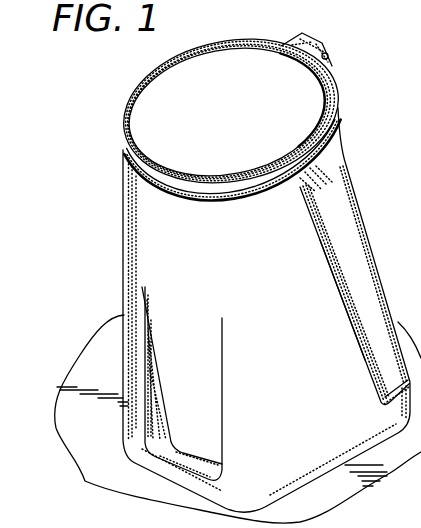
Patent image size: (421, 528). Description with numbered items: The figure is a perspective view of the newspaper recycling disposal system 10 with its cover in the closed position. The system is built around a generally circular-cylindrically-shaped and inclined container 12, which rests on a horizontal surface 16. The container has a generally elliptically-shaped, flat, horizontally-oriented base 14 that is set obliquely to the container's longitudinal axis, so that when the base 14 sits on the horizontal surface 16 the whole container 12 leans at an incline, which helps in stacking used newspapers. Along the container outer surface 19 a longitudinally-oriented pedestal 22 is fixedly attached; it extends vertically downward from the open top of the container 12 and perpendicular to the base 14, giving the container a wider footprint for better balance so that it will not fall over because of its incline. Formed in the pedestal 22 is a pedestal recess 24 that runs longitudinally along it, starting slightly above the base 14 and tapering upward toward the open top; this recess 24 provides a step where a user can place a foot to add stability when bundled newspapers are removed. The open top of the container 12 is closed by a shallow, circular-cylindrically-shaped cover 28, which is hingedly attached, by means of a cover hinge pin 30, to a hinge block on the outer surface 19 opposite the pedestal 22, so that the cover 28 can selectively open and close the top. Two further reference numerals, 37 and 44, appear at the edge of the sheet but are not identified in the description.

The newspaper recycling disposal system 10 is at (104, 159).
The container 12 is at (374, 219).
The base 14 is at (322, 476).
The horizontal surface 16 is at (103, 348).
The container outer surface 19 is at (313, 308).
The container longitudinally-oriented pedestal 22 is at (128, 405).
The container pedestal recess 24 is at (185, 457).
The container cover 28 is at (238, 71).
The cover hinge pin 30 is at (328, 52).
The element 37 is at (420, 97).
The element 44 is at (413, 54).